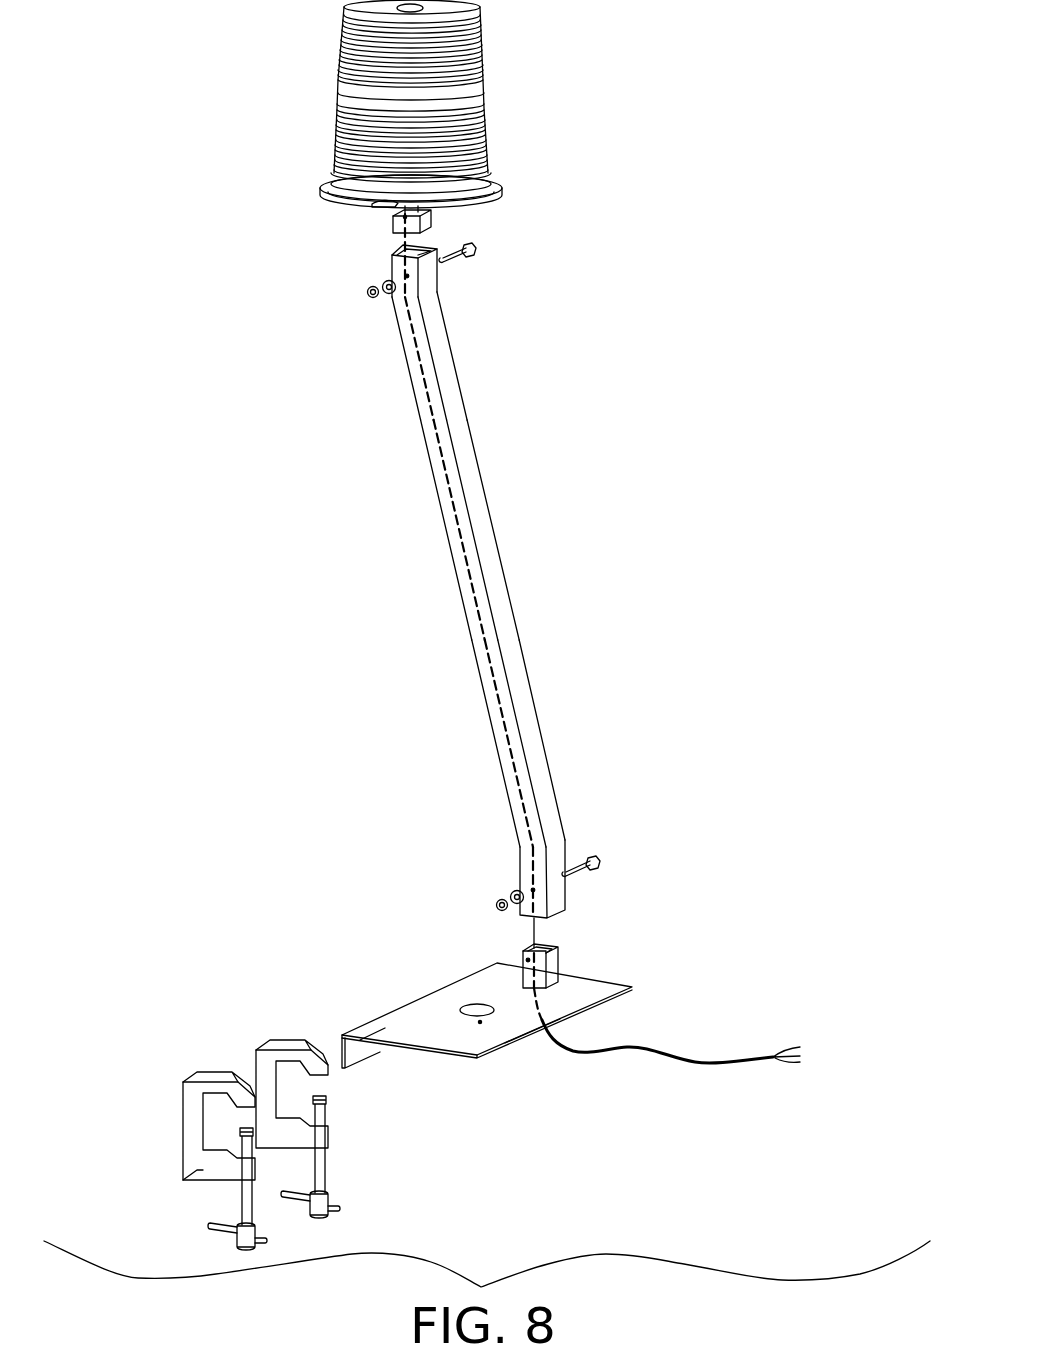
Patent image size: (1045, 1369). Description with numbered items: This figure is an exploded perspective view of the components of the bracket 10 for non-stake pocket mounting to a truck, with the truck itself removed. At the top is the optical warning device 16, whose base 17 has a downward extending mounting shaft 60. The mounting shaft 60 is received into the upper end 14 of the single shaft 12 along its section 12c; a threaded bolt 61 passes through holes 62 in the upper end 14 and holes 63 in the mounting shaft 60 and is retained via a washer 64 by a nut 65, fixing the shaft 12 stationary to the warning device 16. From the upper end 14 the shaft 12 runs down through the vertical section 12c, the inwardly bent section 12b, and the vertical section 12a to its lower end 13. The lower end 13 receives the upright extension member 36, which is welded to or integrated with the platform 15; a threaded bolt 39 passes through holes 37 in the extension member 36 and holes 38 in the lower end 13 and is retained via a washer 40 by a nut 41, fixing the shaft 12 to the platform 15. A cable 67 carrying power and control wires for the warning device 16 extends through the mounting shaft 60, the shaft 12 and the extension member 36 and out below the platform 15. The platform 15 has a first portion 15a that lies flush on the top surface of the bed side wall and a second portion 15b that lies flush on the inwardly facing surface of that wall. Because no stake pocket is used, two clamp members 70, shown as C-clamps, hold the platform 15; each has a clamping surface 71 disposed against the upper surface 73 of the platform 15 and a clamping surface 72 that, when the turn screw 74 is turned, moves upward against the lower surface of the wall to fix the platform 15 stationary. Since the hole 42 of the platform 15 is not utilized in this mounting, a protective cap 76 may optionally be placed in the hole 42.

The bracket 10 is at (194, 555).
The shaft 12 is at (570, 566).
The section of shaft 12a is at (563, 857).
The section of shaft 12b is at (473, 458).
The section of shaft 12c is at (437, 278).
The lower end 13 is at (530, 698).
The upper end 14 is at (437, 293).
The platform 15 is at (476, 1080).
The first portion of platform 15a is at (530, 1033).
The second portion of platform 15b is at (380, 1052).
The optical warning device 16 is at (485, 75).
The base 17 is at (498, 183).
The extension member 36 is at (560, 952).
The holes 37 is at (528, 960).
The holes 38 is at (533, 889).
The threaded bolt 39 is at (600, 858).
The washer 40 is at (516, 896).
The nut 41 is at (499, 906).
The hole 42 is at (480, 1022).
The mounting shaft 60 is at (397, 237).
The threaded bolt 61 is at (475, 250).
The holes 62 is at (406, 278).
The holes 63 is at (404, 218).
The washer 64 is at (389, 290).
The nut 65 is at (371, 294).
The cable 67 is at (550, 930).
The clamp members 70 is at (250, 1101).
The clamping surface 71 is at (312, 1080).
The clamping surface 72 is at (326, 1097).
The upper surface 73 is at (377, 1032).
The turn screw 74 is at (238, 1226).
The protective cap 76 is at (482, 1017).